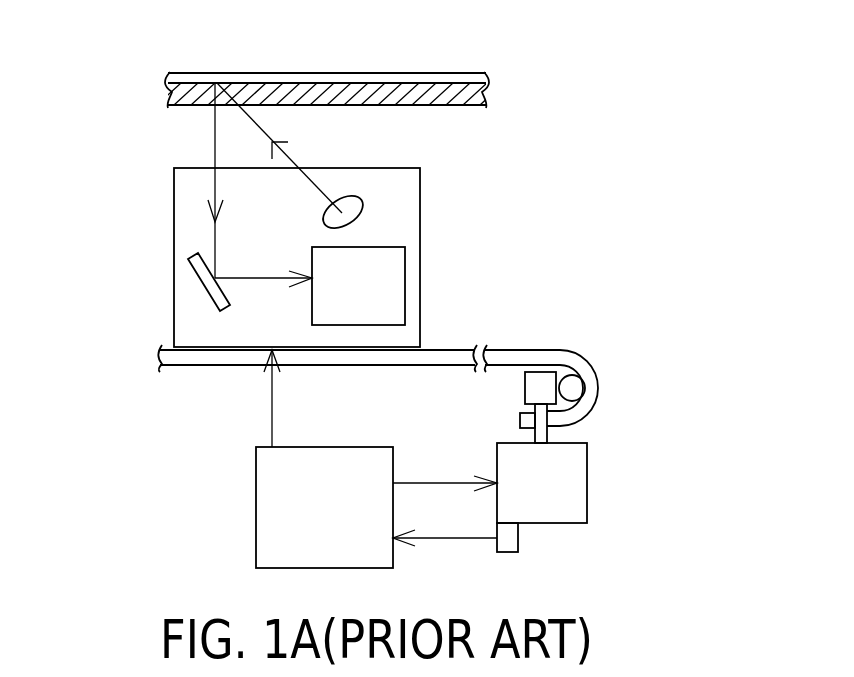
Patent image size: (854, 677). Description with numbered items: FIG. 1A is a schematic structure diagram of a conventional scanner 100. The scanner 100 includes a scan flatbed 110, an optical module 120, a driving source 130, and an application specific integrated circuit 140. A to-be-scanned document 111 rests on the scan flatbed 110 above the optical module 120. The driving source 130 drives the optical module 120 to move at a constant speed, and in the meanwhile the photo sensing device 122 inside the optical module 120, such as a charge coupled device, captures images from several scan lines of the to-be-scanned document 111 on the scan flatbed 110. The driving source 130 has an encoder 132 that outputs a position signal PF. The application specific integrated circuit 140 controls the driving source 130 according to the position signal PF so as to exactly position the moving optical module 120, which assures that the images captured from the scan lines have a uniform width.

The scanner 100 is at (367, 309).
The scan flatbed 110 is at (427, 102).
The to-be-scanned document 111 is at (362, 81).
The optical module 120 is at (308, 215).
The photo sensing device 122 is at (405, 278).
The driving source 130 is at (587, 485).
The encoder 132 is at (518, 540).
The application specific integrated circuit 140 is at (256, 517).